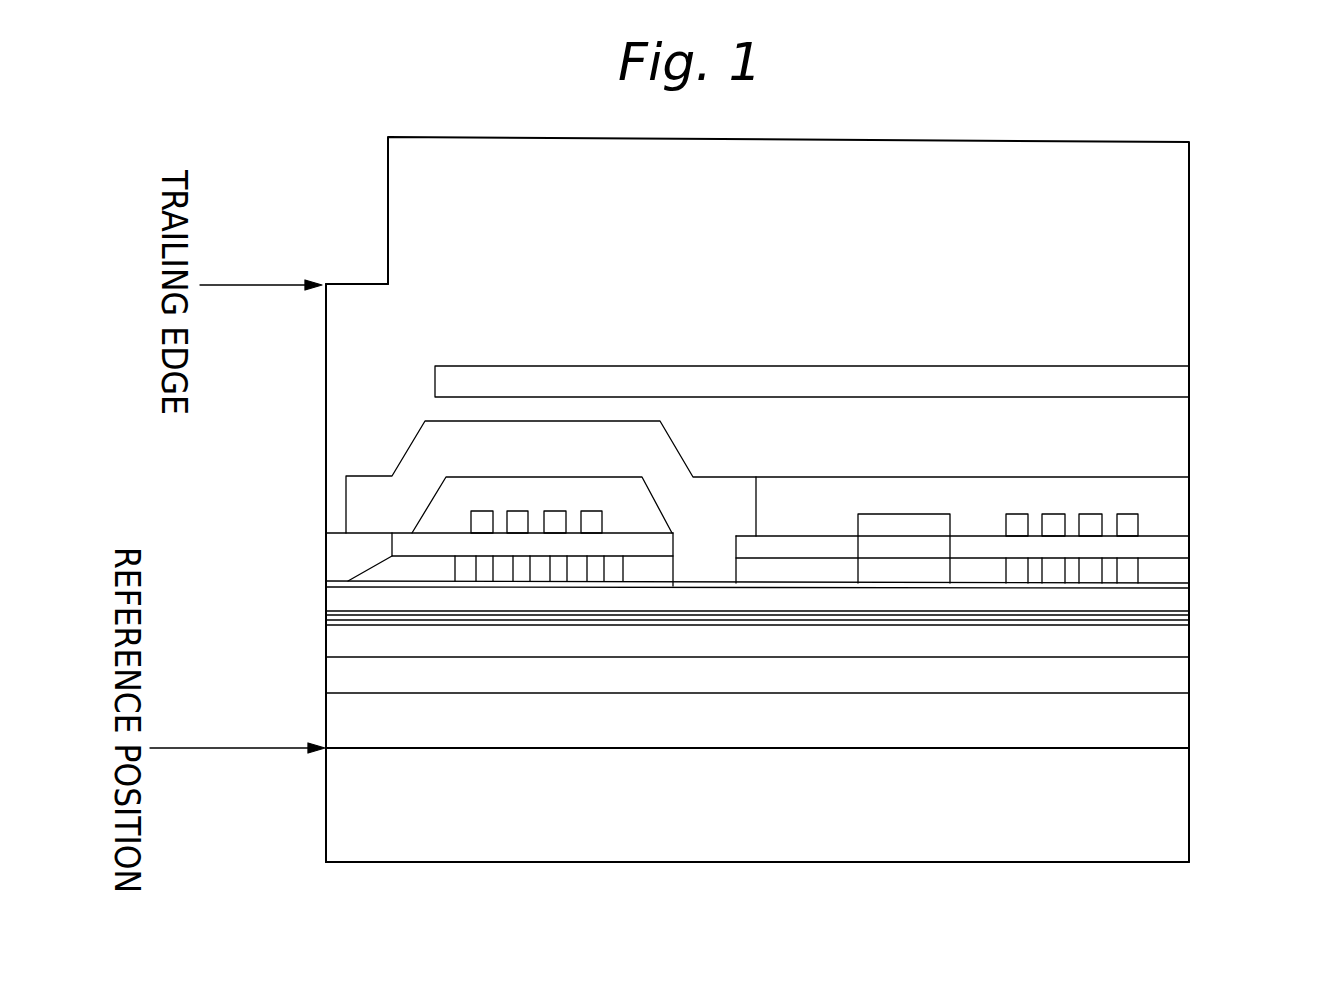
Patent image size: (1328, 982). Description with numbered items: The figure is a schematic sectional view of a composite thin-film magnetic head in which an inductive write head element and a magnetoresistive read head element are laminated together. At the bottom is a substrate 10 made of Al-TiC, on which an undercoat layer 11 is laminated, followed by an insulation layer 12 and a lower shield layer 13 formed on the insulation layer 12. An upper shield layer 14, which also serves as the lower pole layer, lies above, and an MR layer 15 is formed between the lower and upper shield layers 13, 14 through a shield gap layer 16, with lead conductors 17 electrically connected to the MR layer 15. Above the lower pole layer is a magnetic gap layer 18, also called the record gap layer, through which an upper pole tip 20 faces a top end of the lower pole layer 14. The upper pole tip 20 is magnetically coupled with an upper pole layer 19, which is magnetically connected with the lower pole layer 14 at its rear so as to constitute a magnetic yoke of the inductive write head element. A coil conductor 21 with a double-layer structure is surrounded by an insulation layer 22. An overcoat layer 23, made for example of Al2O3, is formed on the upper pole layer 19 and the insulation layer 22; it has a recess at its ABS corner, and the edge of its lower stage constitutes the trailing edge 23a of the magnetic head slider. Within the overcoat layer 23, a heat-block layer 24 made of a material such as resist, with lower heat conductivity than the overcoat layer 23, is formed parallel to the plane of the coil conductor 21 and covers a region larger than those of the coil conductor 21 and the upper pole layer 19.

The substrate 10 is at (342, 800).
The undercoat layer 11 is at (335, 723).
The insulation layer 12 is at (340, 675).
The lower shield layer 13 is at (340, 640).
The upper shield layer 14 is at (337, 592).
The MR layer 15 is at (340, 618).
The shield gap layer 16 is at (340, 613).
The lead conductors 17 is at (1189, 623).
The magnetic gap layer 18 is at (345, 578).
The upper pole layer 19 is at (358, 498).
The upper pole tip 20 is at (340, 545).
The coil conductor 21 is at (483, 515).
The insulation layer 22 is at (438, 513).
The overcoat layer 23 is at (1162, 243).
The trailing edge 23a is at (326, 284).
The heat-block layer 24 is at (1172, 391).